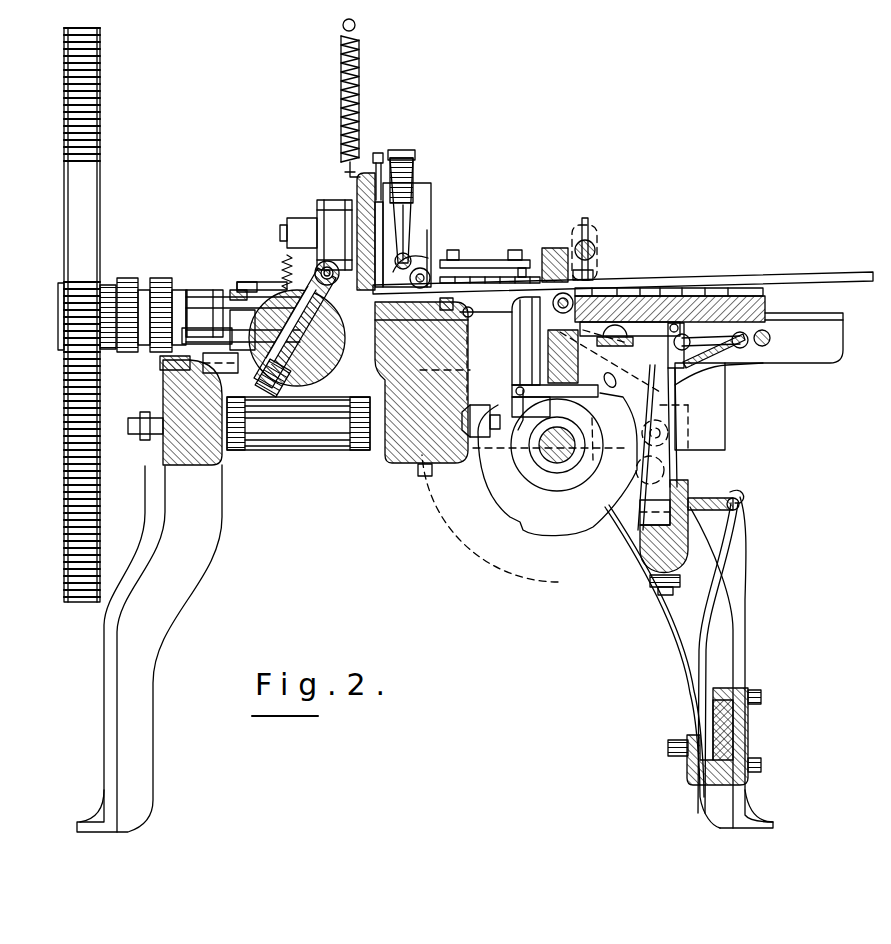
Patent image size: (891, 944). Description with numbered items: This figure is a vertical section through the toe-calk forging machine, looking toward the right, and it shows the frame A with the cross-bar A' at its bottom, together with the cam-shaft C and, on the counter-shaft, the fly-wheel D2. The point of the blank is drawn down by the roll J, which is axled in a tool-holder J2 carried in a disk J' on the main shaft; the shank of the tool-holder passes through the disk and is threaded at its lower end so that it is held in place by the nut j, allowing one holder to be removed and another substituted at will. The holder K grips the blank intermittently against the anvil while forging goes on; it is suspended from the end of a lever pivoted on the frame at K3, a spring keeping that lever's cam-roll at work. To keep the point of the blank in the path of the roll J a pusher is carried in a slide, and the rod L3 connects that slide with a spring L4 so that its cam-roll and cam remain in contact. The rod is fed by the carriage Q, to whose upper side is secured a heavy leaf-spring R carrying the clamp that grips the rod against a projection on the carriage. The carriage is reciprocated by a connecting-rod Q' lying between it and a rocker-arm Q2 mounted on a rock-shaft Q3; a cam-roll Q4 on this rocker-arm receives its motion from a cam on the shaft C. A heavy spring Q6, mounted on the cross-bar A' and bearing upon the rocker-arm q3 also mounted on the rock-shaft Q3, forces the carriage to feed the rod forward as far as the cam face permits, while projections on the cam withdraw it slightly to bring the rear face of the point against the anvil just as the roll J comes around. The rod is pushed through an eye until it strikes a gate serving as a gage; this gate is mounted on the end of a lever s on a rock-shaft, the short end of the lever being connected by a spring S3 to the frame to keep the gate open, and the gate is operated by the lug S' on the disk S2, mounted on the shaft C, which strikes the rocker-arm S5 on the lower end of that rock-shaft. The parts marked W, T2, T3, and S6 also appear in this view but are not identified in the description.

The fly-wheel D2 is at (100, 218).
The frame A is at (425, 567).
The cross-bar A' is at (733, 736).
The roll J is at (298, 346).
The disk J' is at (296, 373).
The nut j is at (277, 390).
The tool-holder J2 is at (280, 276).
The pivot of holder lever K3 is at (360, 100).
The holder K is at (380, 228).
The spring L4 is at (400, 195).
The rod L3 is at (410, 262).
The work plate W is at (820, 312).
The block T3 is at (590, 272).
The post T2 is at (592, 252).
The carriage Q is at (664, 291).
The leaf-spring R is at (600, 310).
The connecting-rod Q' is at (711, 299).
The cam-roll Q4 is at (730, 365).
The rocker-arm Q2 is at (678, 458).
The rock-shaft Q3 is at (634, 549).
The rocker-arm q3 is at (692, 500).
The spring Q6 is at (722, 548).
The cam-shaft C is at (542, 458).
The lug S' is at (563, 445).
The disk S2 is at (580, 480).
The lever s is at (486, 317).
The spring S3 is at (549, 363).
The rocker-arm S5 is at (567, 392).
The roller S6 is at (620, 373).